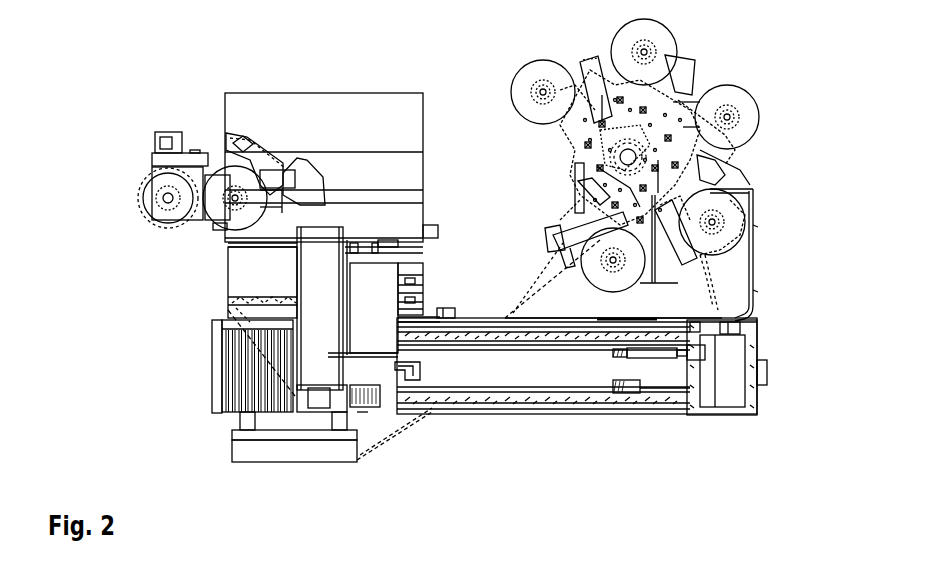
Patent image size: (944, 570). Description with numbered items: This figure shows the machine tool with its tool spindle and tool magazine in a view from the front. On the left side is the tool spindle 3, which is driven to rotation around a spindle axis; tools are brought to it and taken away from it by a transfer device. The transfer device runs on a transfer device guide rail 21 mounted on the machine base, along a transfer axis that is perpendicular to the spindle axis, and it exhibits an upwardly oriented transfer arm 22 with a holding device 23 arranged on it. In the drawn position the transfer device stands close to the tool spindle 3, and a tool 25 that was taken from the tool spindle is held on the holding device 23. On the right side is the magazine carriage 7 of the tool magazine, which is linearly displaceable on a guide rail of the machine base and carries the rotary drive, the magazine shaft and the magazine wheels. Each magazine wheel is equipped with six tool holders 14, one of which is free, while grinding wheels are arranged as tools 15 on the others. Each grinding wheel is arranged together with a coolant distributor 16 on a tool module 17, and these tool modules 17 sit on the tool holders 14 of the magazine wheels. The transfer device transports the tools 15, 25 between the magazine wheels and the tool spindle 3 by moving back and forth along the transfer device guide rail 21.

The tool spindle 3 is at (168, 199).
The magazine carriage 7 is at (720, 287).
The tool holders 14 is at (590, 193).
The tools 15 is at (748, 117).
The coolant distributor 16 is at (687, 53).
The tool module 17 is at (563, 125).
The transfer device guide rail 21 is at (458, 388).
The transfer arm 22 is at (318, 257).
The holding device 23 is at (300, 180).
The tool 25 is at (233, 177).